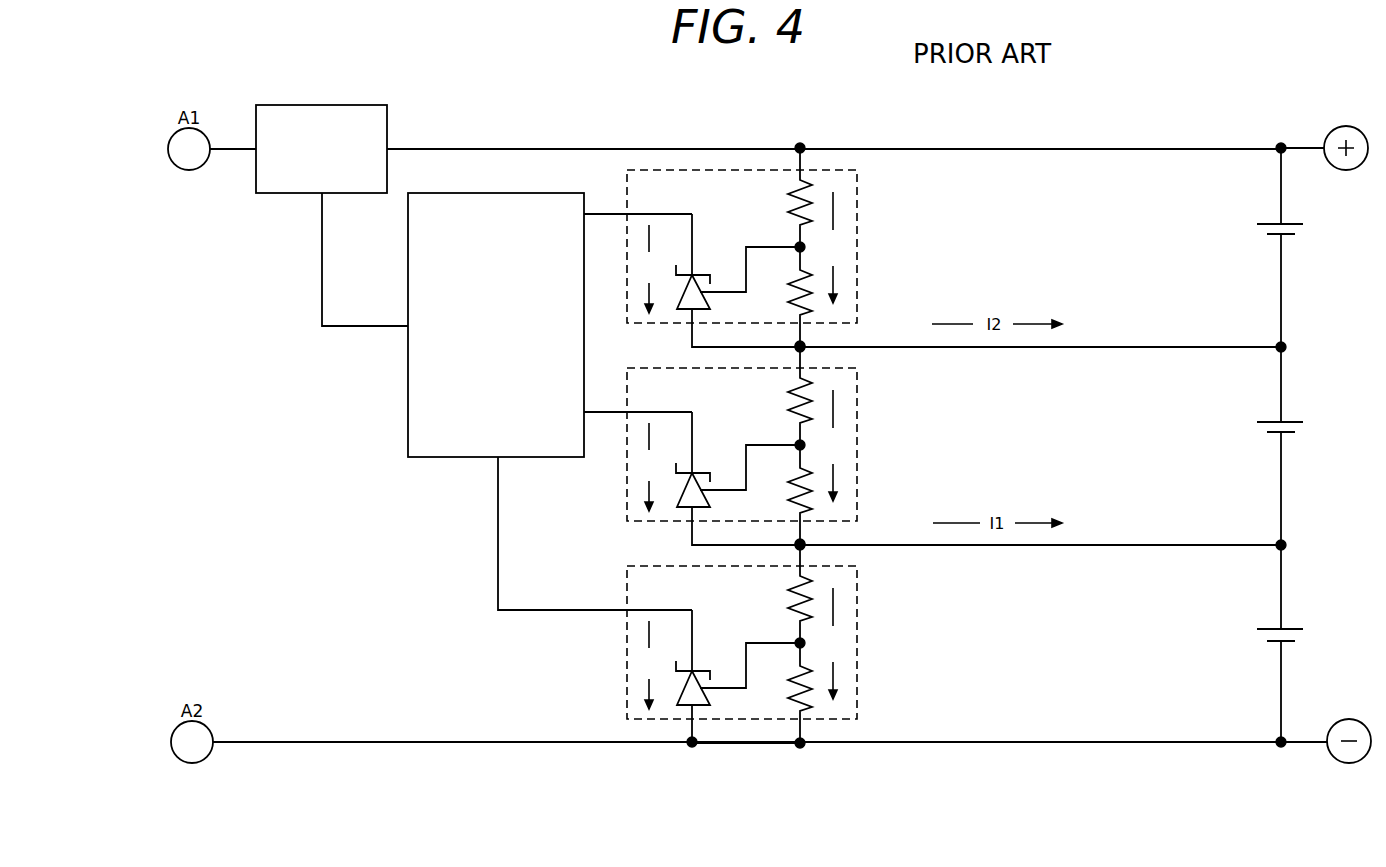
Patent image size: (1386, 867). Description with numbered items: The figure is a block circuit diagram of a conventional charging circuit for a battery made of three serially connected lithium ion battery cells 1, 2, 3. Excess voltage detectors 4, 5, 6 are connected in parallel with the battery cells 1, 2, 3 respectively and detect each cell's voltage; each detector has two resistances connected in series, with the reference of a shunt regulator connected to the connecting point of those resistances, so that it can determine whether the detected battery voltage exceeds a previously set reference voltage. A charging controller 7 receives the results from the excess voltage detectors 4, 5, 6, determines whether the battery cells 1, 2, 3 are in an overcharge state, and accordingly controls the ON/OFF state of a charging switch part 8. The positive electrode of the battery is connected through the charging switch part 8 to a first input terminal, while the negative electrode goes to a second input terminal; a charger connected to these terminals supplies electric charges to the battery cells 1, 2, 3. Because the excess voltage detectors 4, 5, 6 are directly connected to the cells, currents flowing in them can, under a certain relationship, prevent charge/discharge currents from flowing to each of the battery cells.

The battery cell 1 is at (1265, 629).
The battery cell 2 is at (1264, 422).
The battery cell 3 is at (1263, 223).
The excess voltage detector 4 is at (857, 680).
The excess voltage detector 5 is at (857, 482).
The excess voltage detector 6 is at (857, 284).
The charging controller 7 is at (512, 193).
The charging switch part 8 is at (314, 105).